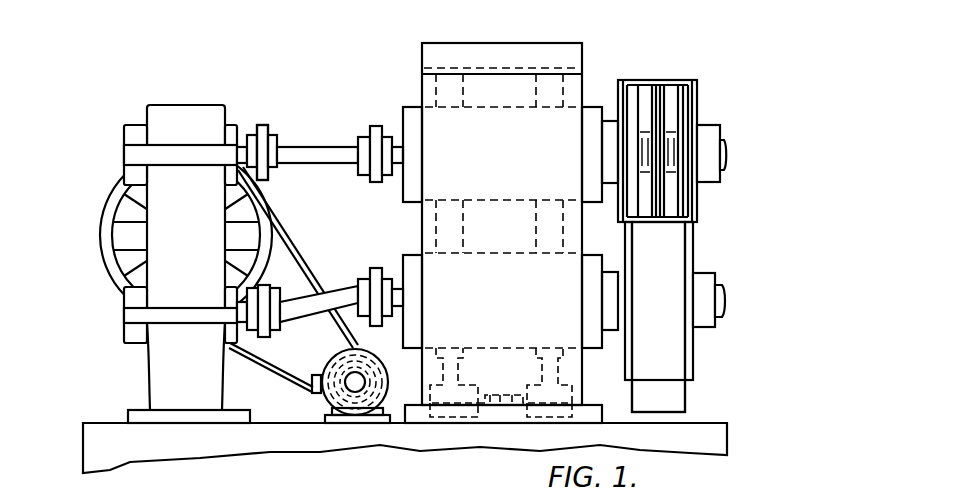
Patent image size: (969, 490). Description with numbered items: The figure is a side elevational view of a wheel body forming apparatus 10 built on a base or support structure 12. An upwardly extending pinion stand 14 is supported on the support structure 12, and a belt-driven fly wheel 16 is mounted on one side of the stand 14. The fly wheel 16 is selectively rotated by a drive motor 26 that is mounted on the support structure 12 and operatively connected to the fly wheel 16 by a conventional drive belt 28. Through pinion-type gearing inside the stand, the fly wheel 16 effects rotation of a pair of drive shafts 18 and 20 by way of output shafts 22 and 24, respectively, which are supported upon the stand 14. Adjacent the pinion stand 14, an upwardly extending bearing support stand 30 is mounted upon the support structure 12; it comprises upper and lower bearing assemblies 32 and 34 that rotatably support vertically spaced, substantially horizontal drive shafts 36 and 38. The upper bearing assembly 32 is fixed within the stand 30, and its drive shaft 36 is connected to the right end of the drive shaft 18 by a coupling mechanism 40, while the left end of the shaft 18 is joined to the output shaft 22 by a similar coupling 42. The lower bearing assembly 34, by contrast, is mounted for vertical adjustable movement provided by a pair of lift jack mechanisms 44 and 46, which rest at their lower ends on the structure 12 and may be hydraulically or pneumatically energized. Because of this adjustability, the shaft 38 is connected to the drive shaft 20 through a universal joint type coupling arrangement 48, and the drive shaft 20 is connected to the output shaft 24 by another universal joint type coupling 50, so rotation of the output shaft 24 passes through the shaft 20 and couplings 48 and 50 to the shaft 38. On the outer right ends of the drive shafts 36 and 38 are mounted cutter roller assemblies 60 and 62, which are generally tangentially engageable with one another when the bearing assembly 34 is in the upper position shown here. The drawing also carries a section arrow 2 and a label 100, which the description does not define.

The section line arrow 2 is at (750, 238).
The wheel body forming apparatus 10 is at (756, 106).
The base or support structure 12 is at (731, 433).
The pinion stand 14 is at (150, 102).
The fly wheel 16 is at (99, 226).
The drive shaft 18 is at (300, 145).
The drive shaft 20 is at (341, 288).
The output shaft 22 is at (238, 143).
The output shaft 24 is at (246, 301).
The drive motor 26 is at (320, 400).
The drive belt 28 is at (294, 236).
The bearing support stand 30 is at (460, 41).
The upper bearing assembly 32 is at (510, 106).
The lower bearing assembly 34 is at (487, 251).
The drive shaft 36 is at (731, 155).
The drive shaft 38 is at (730, 299).
The coupling mechanism 40 is at (377, 124).
The coupling 42 is at (268, 123).
The lift jack mechanism 44 is at (466, 371).
The lift jack mechanism 46 is at (533, 374).
The universal joint type coupling arrangement 48 is at (378, 266).
The universal joint type coupling 50 is at (278, 342).
The cutter roller assembly 60 is at (713, 97).
The cutter roller assembly 62 is at (700, 245).
The workpiece 100 is at (690, 398).